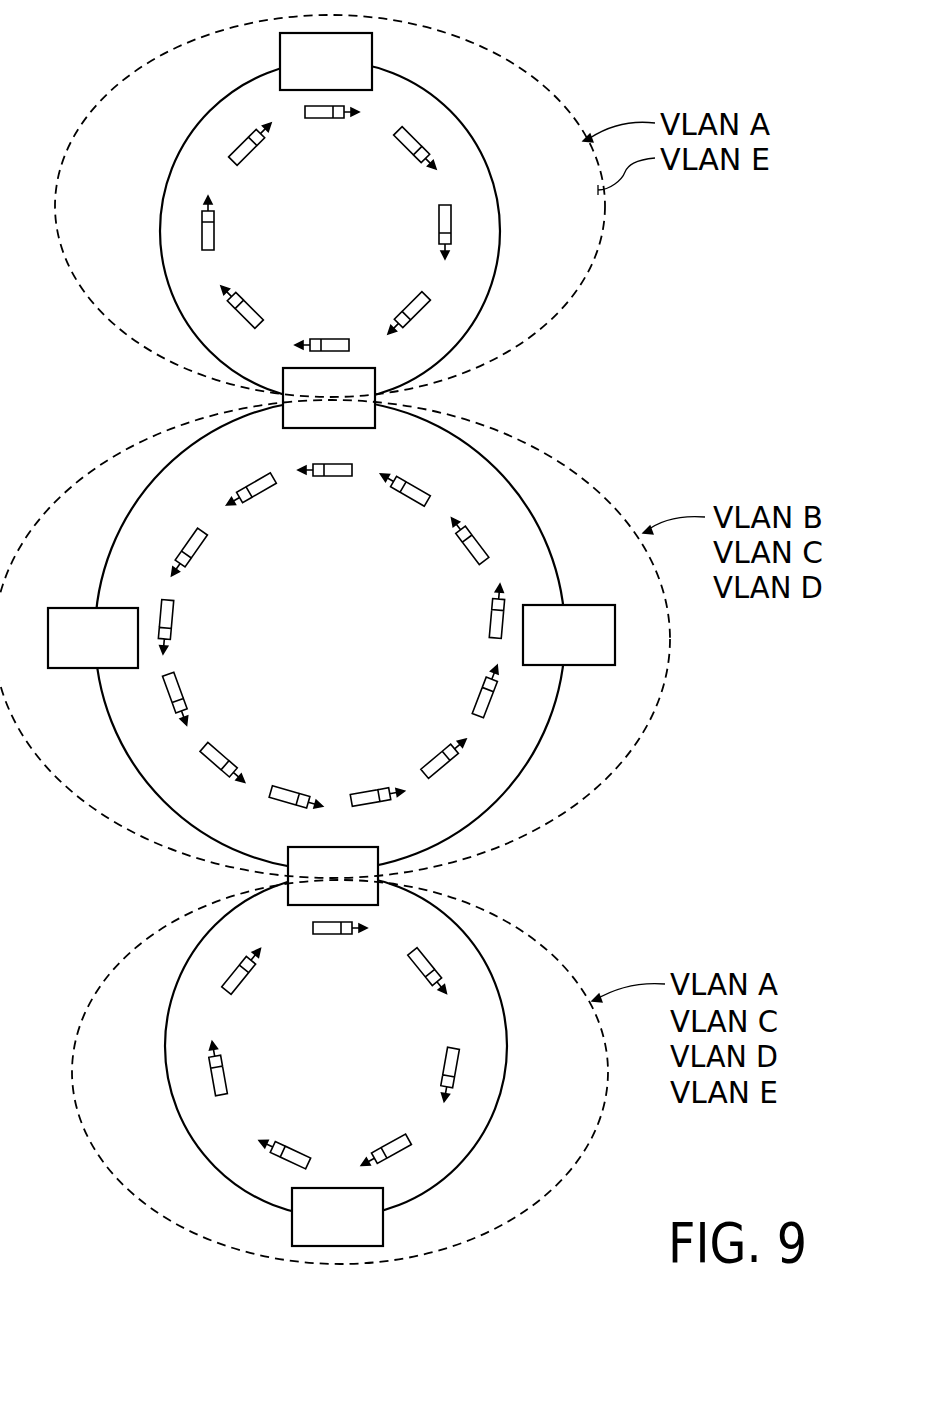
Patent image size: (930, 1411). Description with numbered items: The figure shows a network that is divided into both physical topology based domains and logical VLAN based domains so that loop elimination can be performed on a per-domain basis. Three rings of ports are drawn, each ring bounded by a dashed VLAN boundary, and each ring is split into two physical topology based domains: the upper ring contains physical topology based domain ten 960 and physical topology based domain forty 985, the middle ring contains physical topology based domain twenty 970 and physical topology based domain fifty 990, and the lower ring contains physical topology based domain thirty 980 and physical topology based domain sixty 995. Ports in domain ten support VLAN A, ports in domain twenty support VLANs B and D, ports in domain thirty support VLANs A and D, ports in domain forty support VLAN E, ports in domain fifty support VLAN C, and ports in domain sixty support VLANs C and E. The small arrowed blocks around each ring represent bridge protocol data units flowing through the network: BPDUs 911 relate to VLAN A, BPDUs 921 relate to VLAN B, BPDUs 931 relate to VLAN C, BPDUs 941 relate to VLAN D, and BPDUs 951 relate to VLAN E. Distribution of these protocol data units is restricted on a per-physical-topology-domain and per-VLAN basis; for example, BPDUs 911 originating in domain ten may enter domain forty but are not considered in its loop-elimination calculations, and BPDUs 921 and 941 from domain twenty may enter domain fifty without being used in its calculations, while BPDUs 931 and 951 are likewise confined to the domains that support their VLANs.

The BPDUs relating to VLAN A 911 is at (303, 108).
The BPDUs relating to VLAN B 921 is at (330, 462).
The BPDUs relating to VLAN C 931 is at (250, 484).
The BPDUs relating to VLAN D 941 is at (165, 592).
The BPDUs relating to VLAN E 951 is at (232, 136).
The physical topology based domain 10 960 is at (353, 224).
The physical topology based domain 20 970 is at (352, 631).
The physical topology based domain 30 980 is at (357, 1041).
The physical topology based domain 40 985 is at (353, 309).
The physical topology based domain 50 990 is at (352, 718).
The physical topology based domain 60 995 is at (357, 1126).